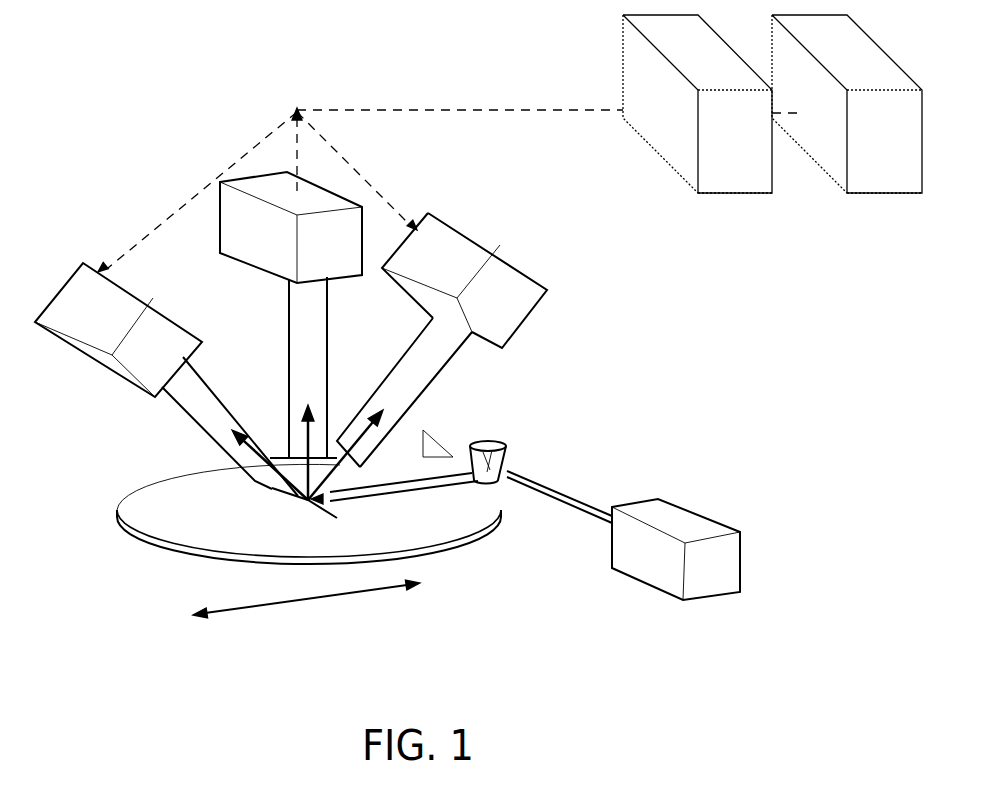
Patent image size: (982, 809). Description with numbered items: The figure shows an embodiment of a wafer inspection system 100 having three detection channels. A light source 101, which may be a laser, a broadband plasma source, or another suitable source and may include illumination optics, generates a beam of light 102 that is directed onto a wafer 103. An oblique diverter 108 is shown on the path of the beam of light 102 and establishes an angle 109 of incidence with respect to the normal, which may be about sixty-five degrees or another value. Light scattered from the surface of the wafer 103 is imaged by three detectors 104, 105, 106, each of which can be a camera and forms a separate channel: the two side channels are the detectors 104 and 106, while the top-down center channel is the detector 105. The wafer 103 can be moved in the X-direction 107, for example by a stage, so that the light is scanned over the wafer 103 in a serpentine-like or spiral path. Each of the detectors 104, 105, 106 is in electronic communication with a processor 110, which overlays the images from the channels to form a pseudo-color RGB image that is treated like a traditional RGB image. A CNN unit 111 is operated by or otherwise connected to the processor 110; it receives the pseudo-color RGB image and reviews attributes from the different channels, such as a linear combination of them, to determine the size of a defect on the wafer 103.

The system 100 is at (110, 117).
The light source 101 is at (687, 520).
The beam of light 102 is at (528, 482).
The wafer 103 is at (137, 508).
The detector 104 is at (458, 237).
The detector 105 is at (277, 183).
The detector 106 is at (70, 315).
The X-direction 107 is at (306, 604).
The oblique diverter 108 is at (490, 445).
The angle 109 is at (449, 438).
The processor 110 is at (697, 104).
The CNN unit 111 is at (847, 104).